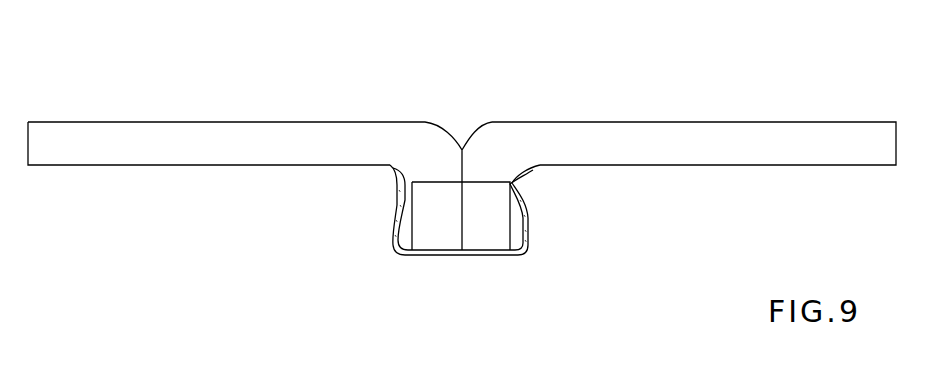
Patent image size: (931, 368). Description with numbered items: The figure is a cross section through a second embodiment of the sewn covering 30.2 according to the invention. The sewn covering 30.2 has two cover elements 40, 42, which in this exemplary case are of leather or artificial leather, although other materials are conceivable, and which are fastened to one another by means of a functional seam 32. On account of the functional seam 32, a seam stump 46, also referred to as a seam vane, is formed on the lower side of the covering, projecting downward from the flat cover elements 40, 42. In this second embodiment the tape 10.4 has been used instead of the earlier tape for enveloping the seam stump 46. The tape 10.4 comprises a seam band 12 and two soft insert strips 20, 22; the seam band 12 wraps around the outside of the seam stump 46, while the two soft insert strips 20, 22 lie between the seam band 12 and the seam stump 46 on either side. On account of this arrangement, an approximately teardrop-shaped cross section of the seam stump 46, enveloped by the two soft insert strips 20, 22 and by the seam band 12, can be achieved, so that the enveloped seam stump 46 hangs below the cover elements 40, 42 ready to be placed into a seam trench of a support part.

The sewn covering 30.2 is at (75, 95).
The cover element 42 is at (180, 134).
The cover element 40 is at (686, 126).
The seam band 12 is at (395, 167).
The soft insert strip 20 is at (412, 222).
The functional seam 32 is at (484, 172).
The soft insert strip 22 is at (516, 213).
The tape 10.4 is at (398, 263).
The seam stump 46 is at (488, 227).